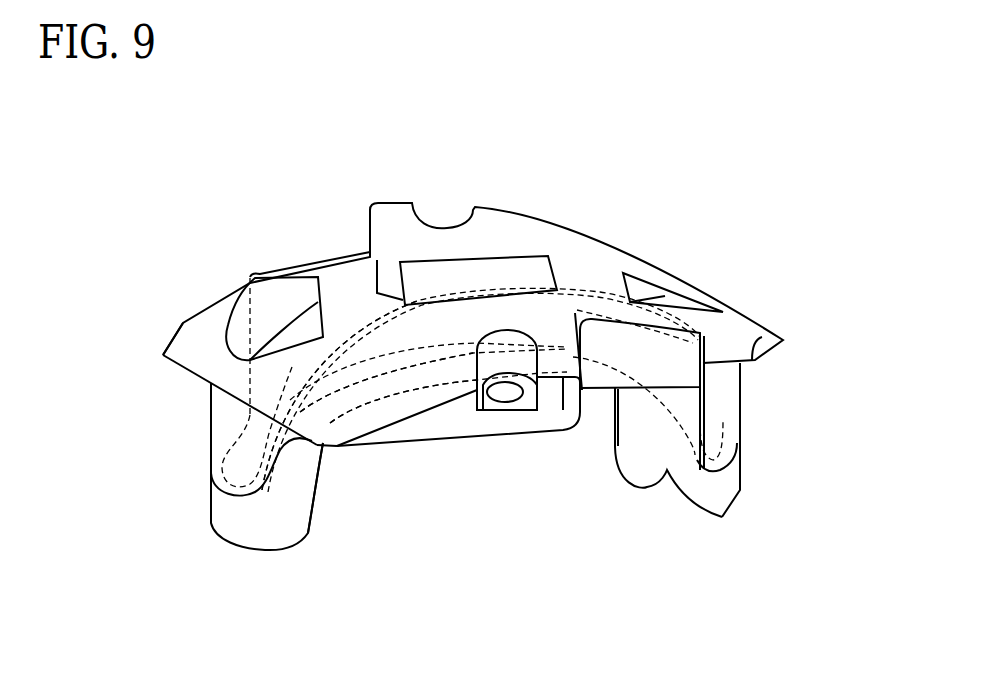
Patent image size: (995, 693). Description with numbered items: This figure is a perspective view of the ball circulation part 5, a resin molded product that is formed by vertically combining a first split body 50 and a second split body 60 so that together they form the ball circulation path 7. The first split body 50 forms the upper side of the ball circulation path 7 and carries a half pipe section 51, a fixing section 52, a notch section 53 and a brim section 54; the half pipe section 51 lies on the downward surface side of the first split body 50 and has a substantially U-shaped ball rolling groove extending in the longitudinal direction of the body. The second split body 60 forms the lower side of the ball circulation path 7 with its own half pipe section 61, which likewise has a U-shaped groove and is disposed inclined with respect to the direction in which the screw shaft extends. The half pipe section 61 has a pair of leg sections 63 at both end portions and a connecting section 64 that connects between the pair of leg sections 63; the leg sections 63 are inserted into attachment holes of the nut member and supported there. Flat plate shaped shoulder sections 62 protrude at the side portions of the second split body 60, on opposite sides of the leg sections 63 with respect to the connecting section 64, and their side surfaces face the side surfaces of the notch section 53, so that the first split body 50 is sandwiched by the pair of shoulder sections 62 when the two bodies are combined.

The ball circulation part 5 is at (547, 216).
The ball circulation path 7 is at (397, 335).
The first split body 50 is at (183, 322).
The half pipe section 51 is at (208, 433).
The fixing section 52 is at (447, 226).
The notch section 53 is at (333, 250).
The brim section 54 is at (590, 228).
The second split body 60 is at (327, 473).
The half pipe section 61 is at (370, 400).
The shoulder section 62 is at (303, 258).
The leg section 63 is at (208, 515).
The connecting section 64 is at (430, 386).